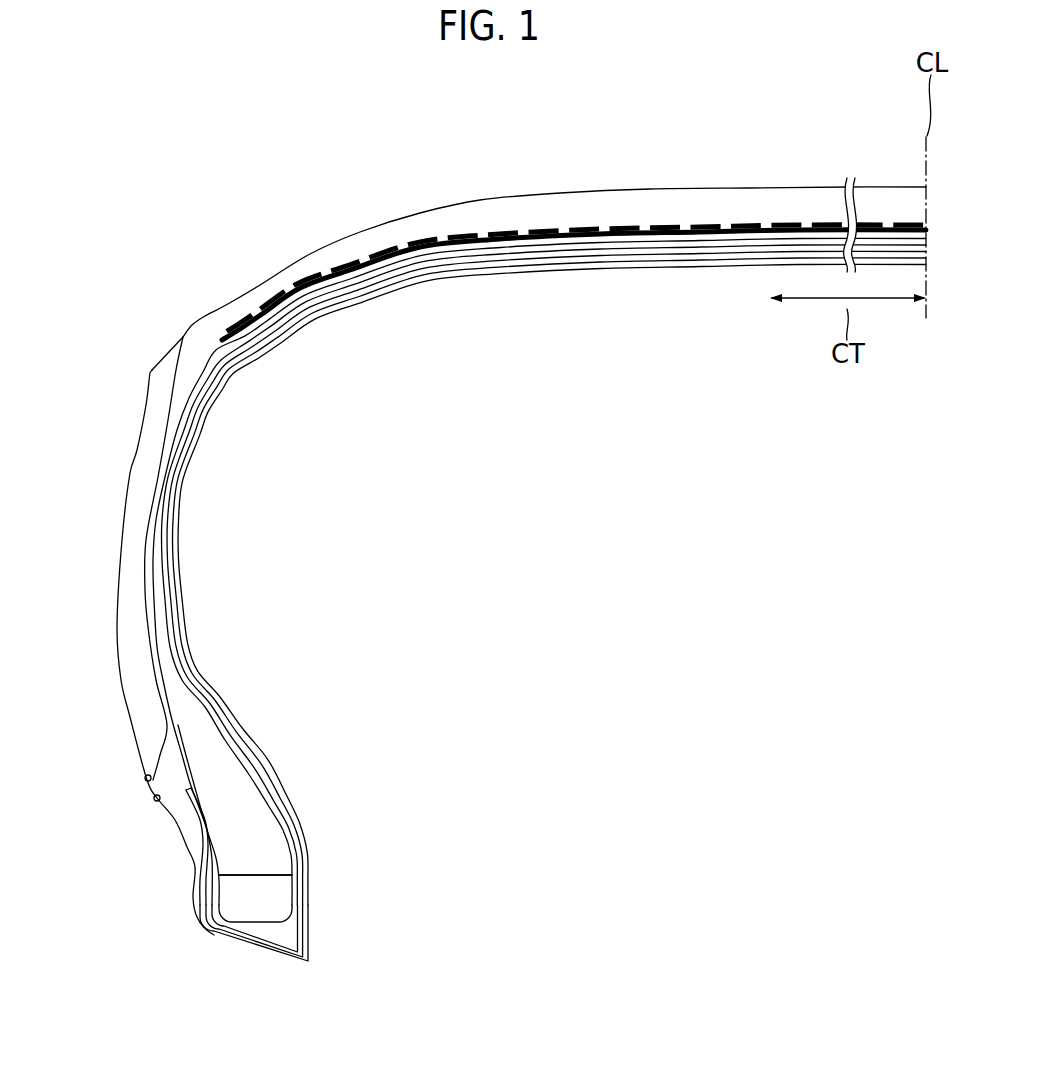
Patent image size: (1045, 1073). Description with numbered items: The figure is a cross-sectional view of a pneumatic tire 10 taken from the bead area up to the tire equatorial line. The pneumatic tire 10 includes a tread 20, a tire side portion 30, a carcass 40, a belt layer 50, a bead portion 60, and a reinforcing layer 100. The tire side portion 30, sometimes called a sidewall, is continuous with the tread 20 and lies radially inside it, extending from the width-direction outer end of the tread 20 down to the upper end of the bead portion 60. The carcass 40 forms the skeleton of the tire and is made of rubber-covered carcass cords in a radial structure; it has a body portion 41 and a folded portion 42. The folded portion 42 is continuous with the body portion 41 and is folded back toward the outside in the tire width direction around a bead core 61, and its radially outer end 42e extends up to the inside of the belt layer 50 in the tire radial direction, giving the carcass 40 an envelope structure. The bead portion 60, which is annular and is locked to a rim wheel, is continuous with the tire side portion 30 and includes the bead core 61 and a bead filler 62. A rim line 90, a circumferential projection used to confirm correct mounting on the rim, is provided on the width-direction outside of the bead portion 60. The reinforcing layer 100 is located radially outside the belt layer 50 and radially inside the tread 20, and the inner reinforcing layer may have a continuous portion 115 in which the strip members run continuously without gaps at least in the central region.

The pneumatic tire 10 is at (848, 158).
The tread 20 is at (608, 188).
The tire side portion 30 is at (121, 542).
The carcass 40 is at (543, 603).
The body portion 41 is at (257, 757).
The folded portion 42 is at (233, 722).
The outer end 42e is at (357, 292).
The belt layer 50 is at (463, 237).
The bead portion 60 is at (345, 882).
The bead core 61 is at (270, 897).
The bead filler 62 is at (263, 857).
The rim line 90 is at (155, 798).
The reinforcing layer 100 is at (505, 230).
The continuous portion 115 is at (772, 232).